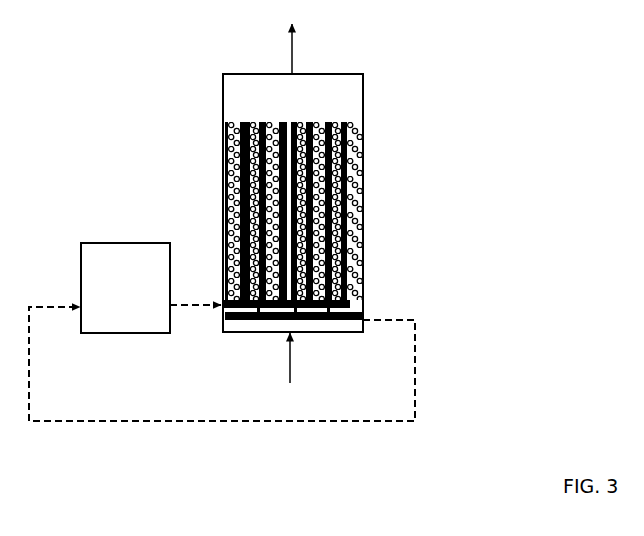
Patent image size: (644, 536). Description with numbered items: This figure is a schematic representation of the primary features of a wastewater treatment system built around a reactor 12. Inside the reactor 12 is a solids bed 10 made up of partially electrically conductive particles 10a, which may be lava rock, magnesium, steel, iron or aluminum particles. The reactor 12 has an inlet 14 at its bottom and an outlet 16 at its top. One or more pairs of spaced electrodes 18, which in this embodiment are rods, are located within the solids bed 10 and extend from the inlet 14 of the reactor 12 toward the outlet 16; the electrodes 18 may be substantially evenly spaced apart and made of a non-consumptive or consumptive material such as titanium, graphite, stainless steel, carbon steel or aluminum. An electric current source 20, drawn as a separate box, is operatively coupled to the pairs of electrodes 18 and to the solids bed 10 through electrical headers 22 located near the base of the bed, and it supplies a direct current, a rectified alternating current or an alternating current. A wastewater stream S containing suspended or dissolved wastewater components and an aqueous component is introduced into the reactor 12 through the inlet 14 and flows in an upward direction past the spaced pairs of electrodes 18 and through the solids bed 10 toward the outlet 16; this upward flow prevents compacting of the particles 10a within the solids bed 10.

The solids bed 10 is at (330, 110).
The partially electrically conductive particles 10a is at (357, 180).
The reactor 12 is at (366, 113).
The inlet 14 is at (295, 336).
The outlet 16 is at (296, 67).
The spaced electrodes 18 is at (241, 116).
The electric current source 20 is at (138, 297).
The electrical headers 22 is at (351, 303).
The wastewater stream S is at (287, 372).